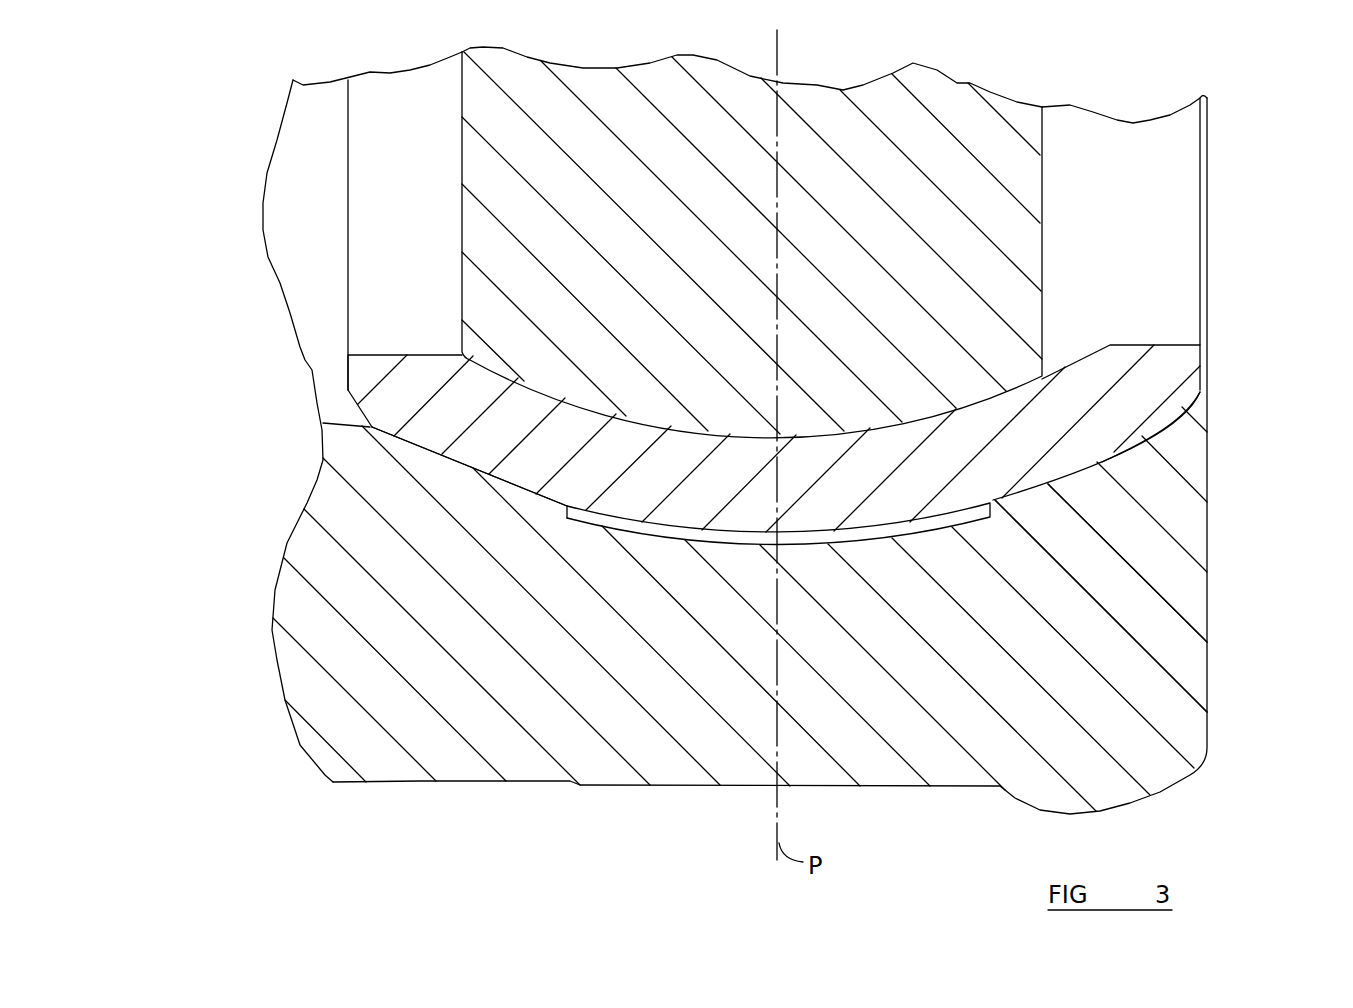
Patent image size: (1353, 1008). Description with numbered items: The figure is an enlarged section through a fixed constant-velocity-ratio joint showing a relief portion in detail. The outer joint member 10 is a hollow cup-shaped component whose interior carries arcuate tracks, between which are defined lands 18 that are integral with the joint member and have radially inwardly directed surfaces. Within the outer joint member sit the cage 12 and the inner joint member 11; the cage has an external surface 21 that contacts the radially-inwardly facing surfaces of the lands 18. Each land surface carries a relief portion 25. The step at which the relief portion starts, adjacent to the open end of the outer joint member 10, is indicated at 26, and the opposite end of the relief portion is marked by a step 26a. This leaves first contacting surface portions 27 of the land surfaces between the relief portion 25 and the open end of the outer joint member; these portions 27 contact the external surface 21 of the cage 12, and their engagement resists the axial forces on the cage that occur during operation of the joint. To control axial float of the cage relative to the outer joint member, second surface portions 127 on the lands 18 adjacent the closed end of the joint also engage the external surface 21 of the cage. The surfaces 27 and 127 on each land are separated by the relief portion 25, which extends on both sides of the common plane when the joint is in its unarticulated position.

The outer joint member 10 is at (1128, 748).
The inner joint member 11 is at (975, 207).
The cage 12 is at (1160, 363).
The lands 18 is at (1088, 463).
The external surface 21 is at (370, 428).
The relief portion 25 is at (735, 543).
The step 26 is at (993, 500).
The step 26a is at (565, 505).
The first contacting surface portions 27 is at (1082, 540).
The second surface portions 127 is at (477, 468).